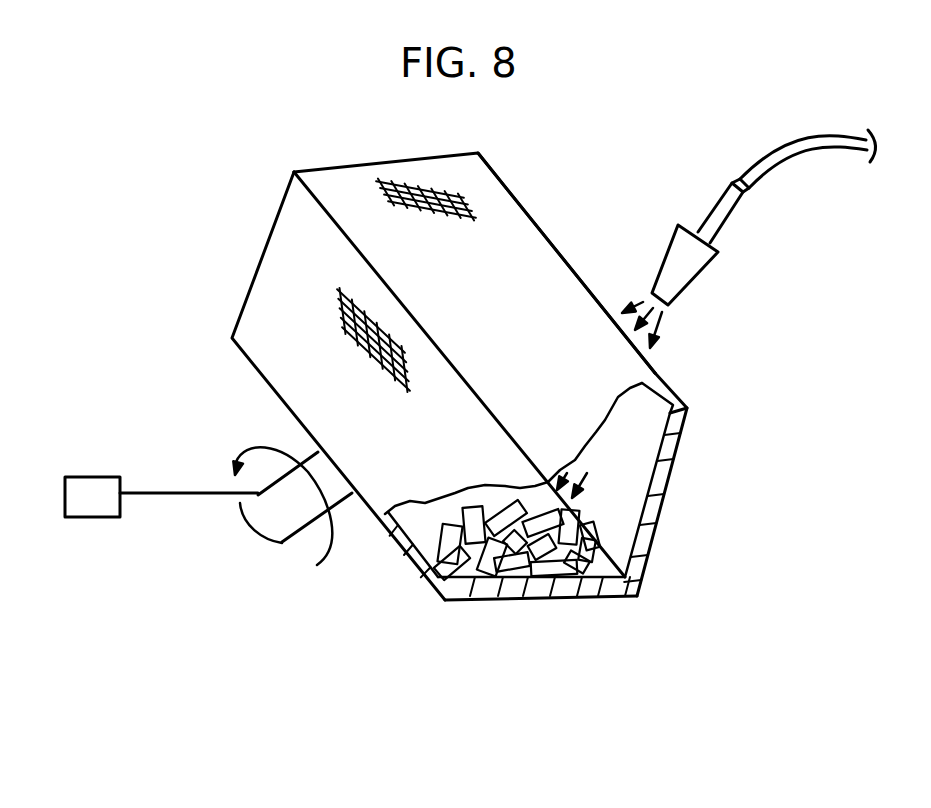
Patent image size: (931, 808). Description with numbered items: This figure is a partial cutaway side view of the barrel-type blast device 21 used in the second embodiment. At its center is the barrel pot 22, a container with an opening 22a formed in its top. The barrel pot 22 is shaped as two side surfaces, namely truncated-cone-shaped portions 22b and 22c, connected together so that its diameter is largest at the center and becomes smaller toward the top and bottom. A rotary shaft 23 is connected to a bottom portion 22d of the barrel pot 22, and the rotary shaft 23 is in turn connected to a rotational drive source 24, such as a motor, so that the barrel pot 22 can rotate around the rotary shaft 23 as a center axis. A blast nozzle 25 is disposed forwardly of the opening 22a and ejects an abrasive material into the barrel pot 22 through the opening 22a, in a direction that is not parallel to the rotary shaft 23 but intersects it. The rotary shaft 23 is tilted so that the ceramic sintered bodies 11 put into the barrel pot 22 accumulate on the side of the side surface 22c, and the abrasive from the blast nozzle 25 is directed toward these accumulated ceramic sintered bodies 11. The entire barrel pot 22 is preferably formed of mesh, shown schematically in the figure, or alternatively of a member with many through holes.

The ceramic sintered bodies 11 is at (423, 592).
The barrel-type blast device 21 is at (243, 207).
The barrel pot 22 is at (551, 230).
The opening 22a is at (660, 386).
The side surface (truncated-cone-shaped portion) 22b is at (660, 508).
The side surface (truncated-cone-shaped portion) 22c is at (607, 598).
The bottom portion 22d is at (255, 367).
The rotary shaft 23 is at (285, 517).
The rotational drive source 24 is at (97, 475).
The blast nozzle 25 is at (700, 275).